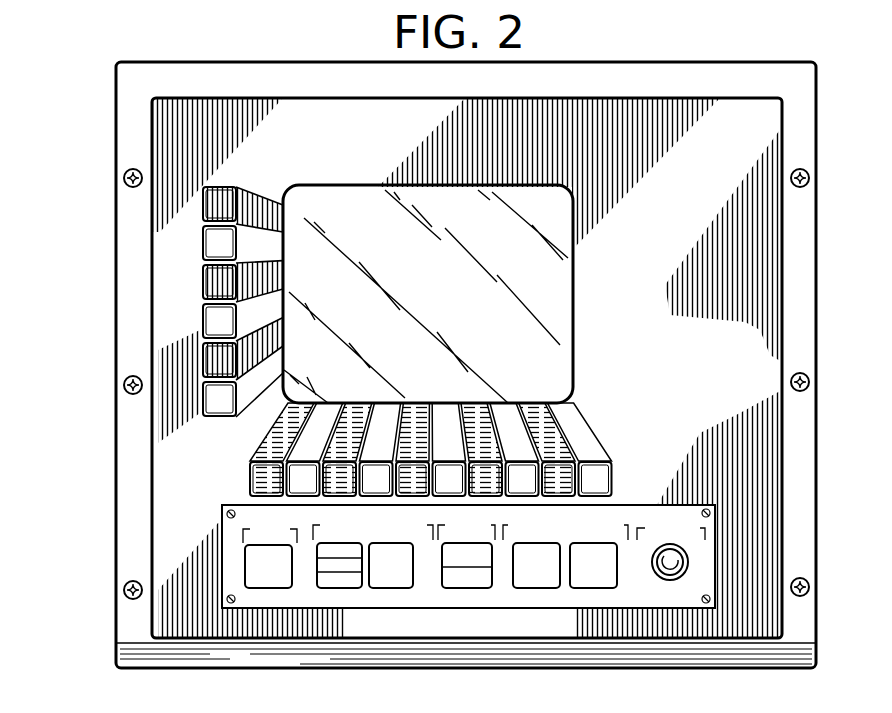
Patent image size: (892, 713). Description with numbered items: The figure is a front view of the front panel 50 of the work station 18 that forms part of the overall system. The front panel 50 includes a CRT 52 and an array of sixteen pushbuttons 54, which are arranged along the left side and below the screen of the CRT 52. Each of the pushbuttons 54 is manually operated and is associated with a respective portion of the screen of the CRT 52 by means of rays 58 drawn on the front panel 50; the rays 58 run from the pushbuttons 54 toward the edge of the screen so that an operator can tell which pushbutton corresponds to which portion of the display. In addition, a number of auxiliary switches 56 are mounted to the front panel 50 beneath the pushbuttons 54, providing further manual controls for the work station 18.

The work station 18 is at (112, 427).
The front panel 50 is at (165, 521).
The CRT 52 is at (552, 385).
The pushbuttons 54 is at (215, 285).
The auxiliary switches 56 is at (463, 588).
The rays 58 is at (257, 277).